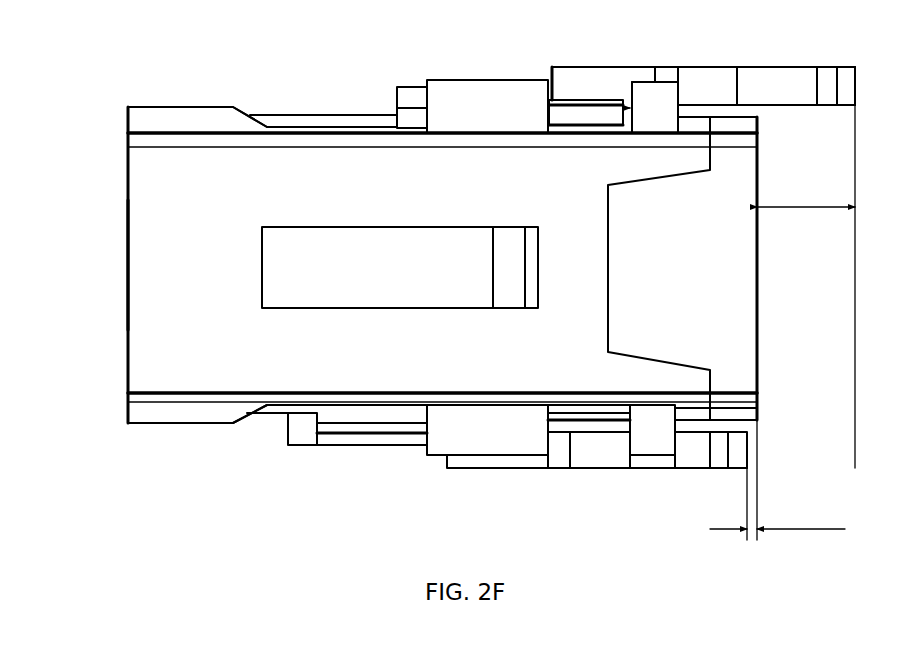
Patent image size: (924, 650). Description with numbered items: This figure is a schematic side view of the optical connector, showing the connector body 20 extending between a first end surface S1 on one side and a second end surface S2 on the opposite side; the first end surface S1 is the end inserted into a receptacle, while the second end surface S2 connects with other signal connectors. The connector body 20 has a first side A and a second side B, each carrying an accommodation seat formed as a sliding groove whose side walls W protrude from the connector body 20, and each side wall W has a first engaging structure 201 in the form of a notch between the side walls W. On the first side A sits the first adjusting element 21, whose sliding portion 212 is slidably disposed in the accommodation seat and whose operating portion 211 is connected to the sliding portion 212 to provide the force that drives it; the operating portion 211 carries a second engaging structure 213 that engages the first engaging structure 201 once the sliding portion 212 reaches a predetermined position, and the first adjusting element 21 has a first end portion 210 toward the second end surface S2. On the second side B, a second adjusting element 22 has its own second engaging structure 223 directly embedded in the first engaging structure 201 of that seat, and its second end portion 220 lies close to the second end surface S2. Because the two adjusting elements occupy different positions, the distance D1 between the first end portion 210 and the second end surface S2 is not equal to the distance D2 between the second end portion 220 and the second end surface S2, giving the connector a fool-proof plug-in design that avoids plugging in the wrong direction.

The connector body 20 is at (138, 104).
The first adjusting element 21 is at (558, 64).
The second adjusting element 22 is at (446, 462).
The first engaging structure 201 is at (565, 127).
The first end portion 210 is at (856, 95).
The operating portion 211 is at (791, 69).
The sliding portion 212 is at (413, 85).
The second engaging structure 213 is at (700, 78).
The second end portion 220 is at (748, 468).
The second engaging structure 223 is at (580, 457).
The first side A is at (254, 121).
The second side B is at (222, 427).
The side walls W is at (450, 113).
The first end surface S1 is at (128, 278).
The second end surface S2 is at (760, 283).
The distance D1 is at (806, 286).
The distance D2 is at (777, 480).